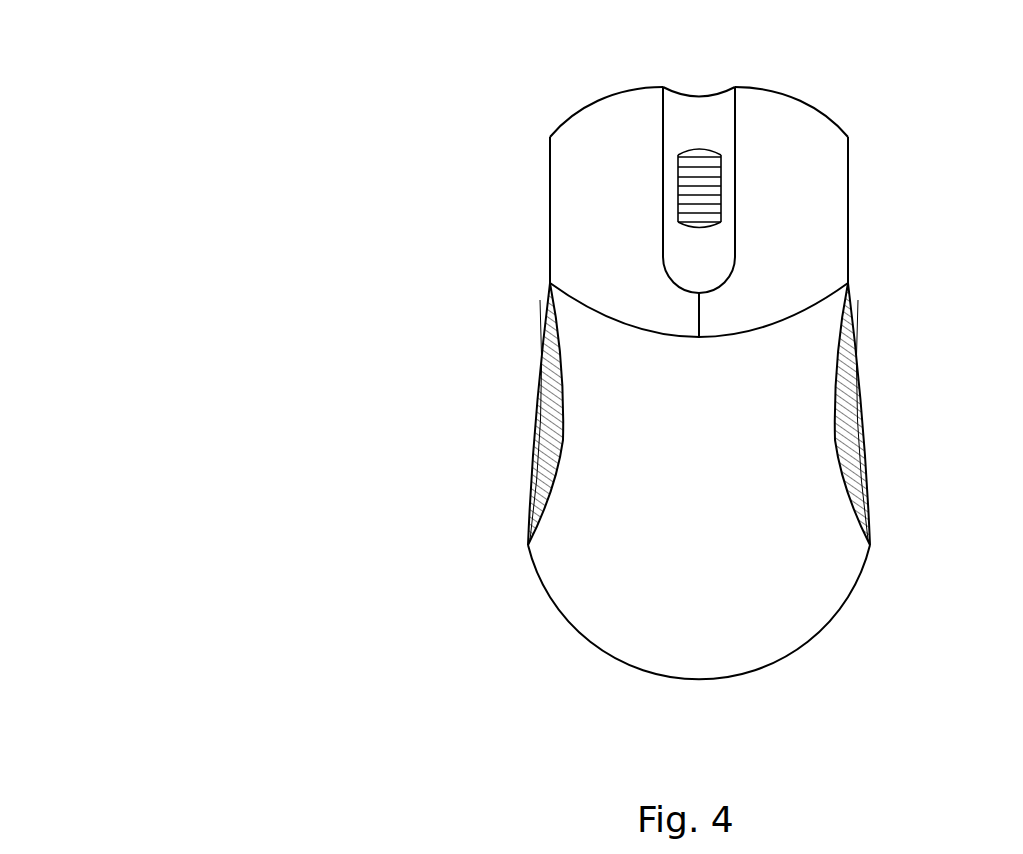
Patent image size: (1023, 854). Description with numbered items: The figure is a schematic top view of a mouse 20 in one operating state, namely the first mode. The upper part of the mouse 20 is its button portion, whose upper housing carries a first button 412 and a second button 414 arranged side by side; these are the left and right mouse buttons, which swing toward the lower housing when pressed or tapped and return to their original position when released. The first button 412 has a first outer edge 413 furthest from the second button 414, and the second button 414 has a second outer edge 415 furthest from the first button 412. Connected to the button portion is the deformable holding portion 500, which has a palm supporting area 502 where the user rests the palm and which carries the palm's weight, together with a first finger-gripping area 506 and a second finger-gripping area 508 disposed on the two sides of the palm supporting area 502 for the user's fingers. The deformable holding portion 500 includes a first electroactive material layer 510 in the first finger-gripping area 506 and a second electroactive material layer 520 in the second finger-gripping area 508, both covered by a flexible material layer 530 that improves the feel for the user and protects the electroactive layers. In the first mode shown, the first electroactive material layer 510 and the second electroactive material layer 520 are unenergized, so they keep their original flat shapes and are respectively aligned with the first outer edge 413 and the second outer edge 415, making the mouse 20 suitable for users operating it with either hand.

The mouse 20 is at (458, 31).
The first button 412 is at (625, 103).
The second button 414 is at (758, 103).
The first outer edge 413 is at (550, 198).
The second outer edge 415 is at (848, 198).
The deformable holding portion 500 is at (554, 508).
The palm supporting area 502 is at (700, 663).
The first finger-gripping area 506 is at (470, 414).
The second finger-gripping area 508 is at (926, 414).
The first electroactive material layer 510 is at (547, 424).
The second electroactive material layer 520 is at (858, 425).
The flexible material layer 530 is at (540, 458).